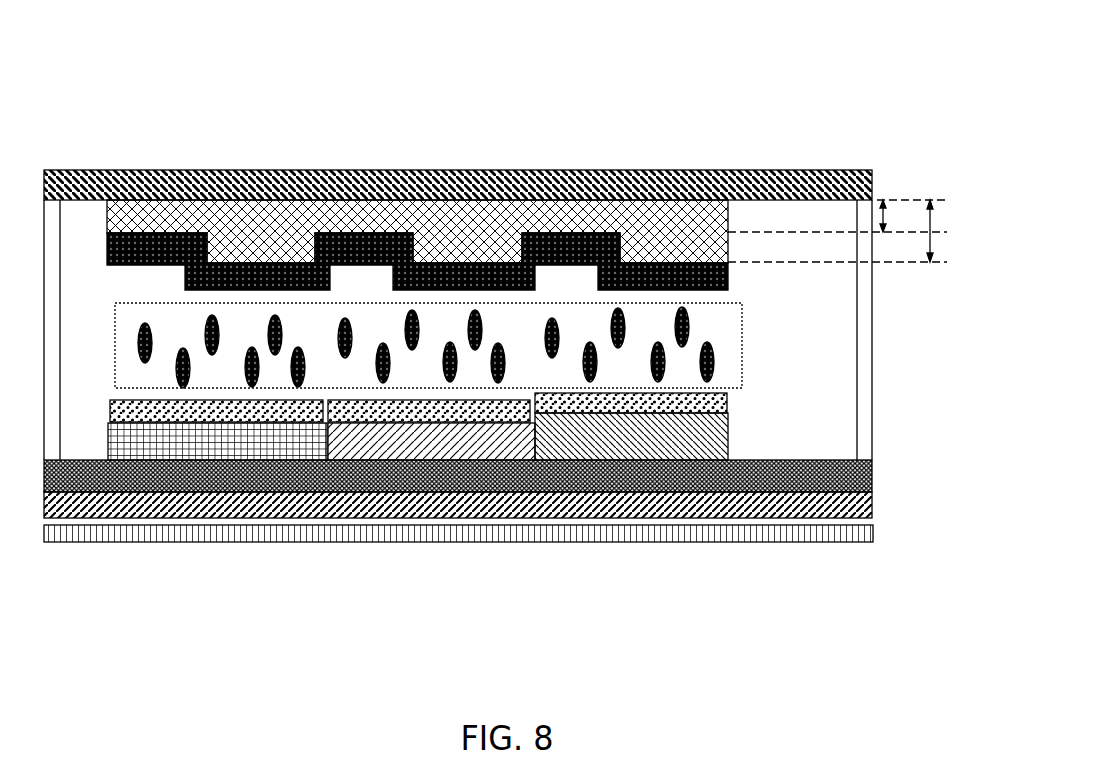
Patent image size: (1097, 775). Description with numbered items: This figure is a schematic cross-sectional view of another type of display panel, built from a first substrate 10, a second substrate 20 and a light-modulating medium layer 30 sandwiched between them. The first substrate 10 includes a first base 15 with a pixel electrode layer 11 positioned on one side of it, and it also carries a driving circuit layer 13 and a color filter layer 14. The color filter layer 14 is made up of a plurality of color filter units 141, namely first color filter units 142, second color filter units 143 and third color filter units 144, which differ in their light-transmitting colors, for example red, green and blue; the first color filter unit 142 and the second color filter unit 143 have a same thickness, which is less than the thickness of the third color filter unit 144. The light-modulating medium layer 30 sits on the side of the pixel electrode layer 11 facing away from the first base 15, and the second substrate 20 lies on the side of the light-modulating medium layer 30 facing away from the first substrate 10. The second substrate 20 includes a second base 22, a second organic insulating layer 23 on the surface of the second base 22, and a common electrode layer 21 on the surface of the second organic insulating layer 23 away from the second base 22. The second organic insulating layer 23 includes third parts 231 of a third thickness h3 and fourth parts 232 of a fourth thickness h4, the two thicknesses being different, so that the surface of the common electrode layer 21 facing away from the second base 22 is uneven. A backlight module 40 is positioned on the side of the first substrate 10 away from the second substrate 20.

The first substrate 10 is at (458, 536).
The pixel electrode layer 11 is at (677, 400).
The driving circuit layer 13 is at (188, 475).
The color filter layer 14 is at (418, 519).
The color filter units 141 is at (418, 499).
The first color filter unit 142 is at (262, 452).
The second color filter unit 143 is at (395, 452).
The third color filter unit 144 is at (588, 452).
The first base 15 is at (458, 559).
The second substrate 20 is at (458, 172).
The common electrode layer 21 is at (363, 230).
The second base 22 is at (292, 178).
The second organic insulating layer 23 is at (417, 173).
The third part 231 is at (488, 247).
The fourth part 232 is at (397, 223).
The light-modulating medium layer 30 is at (710, 303).
The backlight module 40 is at (855, 533).
The third thickness h3 is at (846, 231).
The fourth thickness h4 is at (837, 216).